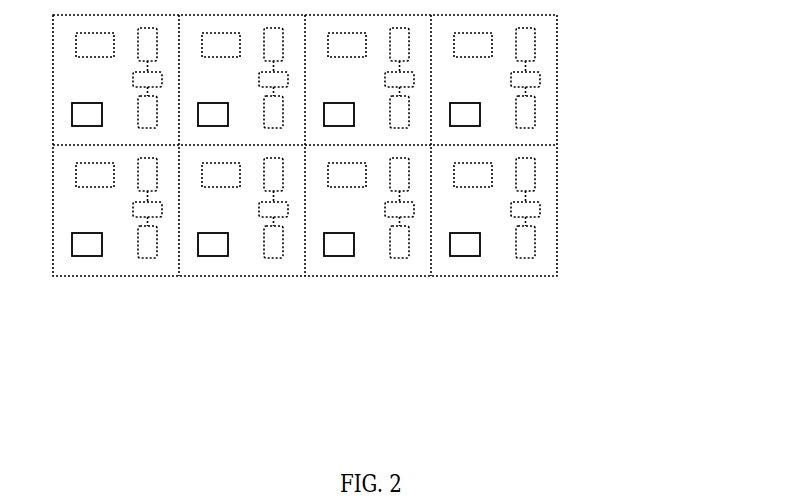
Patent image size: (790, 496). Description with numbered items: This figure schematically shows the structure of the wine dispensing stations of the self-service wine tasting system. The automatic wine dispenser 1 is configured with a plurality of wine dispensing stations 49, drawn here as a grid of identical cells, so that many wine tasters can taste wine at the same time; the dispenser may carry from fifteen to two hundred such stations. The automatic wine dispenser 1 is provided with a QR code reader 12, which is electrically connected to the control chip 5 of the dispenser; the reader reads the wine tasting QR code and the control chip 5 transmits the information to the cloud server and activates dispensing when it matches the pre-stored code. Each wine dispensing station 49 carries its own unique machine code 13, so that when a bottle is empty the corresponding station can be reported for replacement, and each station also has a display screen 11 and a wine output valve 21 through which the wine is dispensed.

The automatic wine dispenser 1 is at (558, 144).
The control chip 5 is at (540, 80).
The display screen 11 is at (535, 176).
The QR code reader 12 is at (535, 243).
The machine code 13 is at (213, 257).
The wine output valve 21 is at (473, 188).
The wine dispensing station 49 is at (508, 291).